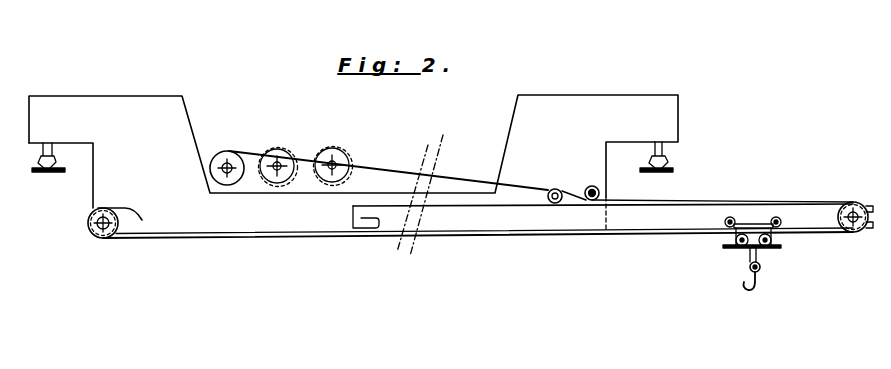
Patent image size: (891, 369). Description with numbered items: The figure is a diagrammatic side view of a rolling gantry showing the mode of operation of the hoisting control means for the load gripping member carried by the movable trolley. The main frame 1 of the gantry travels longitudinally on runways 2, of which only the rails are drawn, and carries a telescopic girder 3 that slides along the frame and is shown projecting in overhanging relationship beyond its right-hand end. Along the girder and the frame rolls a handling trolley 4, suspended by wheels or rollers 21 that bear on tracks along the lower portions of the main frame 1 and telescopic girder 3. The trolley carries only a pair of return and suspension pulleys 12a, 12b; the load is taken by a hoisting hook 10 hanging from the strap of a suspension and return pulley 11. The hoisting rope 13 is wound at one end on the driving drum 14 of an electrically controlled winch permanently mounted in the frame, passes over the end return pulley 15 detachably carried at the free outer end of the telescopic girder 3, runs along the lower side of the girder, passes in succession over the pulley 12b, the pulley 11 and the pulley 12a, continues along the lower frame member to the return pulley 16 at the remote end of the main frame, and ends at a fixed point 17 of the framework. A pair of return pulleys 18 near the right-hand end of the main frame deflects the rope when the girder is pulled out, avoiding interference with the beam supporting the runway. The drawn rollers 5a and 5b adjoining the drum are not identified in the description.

The main frame 1 is at (191, 111).
The runways 2 is at (50, 172).
The telescopic girder 3 is at (684, 224).
The handling trolley 4 is at (720, 260).
The drive roller 5a is at (283, 150).
The drive roller 5b is at (340, 149).
The hoisting hook 10 is at (757, 288).
The suspension and return pulley 11 is at (763, 273).
The return and suspension pulley 12a is at (742, 246).
The return and suspension pulley 12b is at (783, 246).
The hoisting rope 13 is at (407, 168).
The driving drum 14 is at (229, 150).
The end return pulley 15 is at (849, 203).
The return pulley 16 is at (97, 240).
The fixed point 17 is at (135, 222).
The return pulleys 18 is at (590, 186).
The wheels or rollers 21 is at (728, 218).